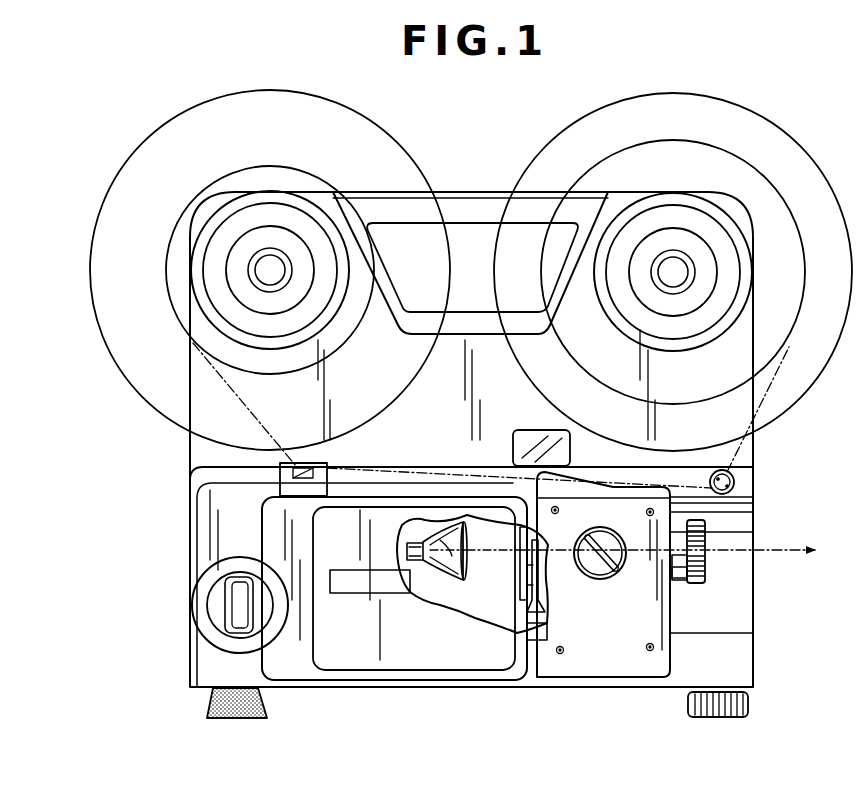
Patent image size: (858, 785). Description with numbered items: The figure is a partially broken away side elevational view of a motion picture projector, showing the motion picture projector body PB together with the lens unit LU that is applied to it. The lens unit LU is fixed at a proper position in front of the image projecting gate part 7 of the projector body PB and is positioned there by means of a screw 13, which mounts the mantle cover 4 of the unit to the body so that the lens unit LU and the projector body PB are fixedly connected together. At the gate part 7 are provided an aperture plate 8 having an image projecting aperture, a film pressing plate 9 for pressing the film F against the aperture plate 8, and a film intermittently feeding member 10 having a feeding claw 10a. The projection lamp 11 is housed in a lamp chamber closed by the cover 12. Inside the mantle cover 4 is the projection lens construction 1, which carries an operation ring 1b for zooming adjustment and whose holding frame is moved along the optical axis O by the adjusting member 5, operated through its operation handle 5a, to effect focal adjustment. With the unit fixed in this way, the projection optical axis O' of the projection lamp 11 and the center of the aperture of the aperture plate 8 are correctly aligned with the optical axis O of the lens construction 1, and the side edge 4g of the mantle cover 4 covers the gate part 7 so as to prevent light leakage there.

The projection lens construction 1 is at (678, 580).
The operation ring 1b is at (700, 562).
The mantle cover 4 is at (638, 670).
The side edge 4g is at (535, 630).
The adjusting member 5 is at (610, 543).
The operation handle 5a is at (607, 563).
The image projecting gate part 7 is at (518, 607).
The aperture plate 8 is at (530, 580).
The film pressing plate 9 is at (533, 557).
The film intermittently feeding member 10 is at (522, 593).
The feeding claw 10a is at (528, 562).
The projection lamp 11 is at (443, 565).
The cover for the lamp chamber 12 is at (410, 662).
The screw 13 is at (560, 656).
The optical axis O is at (670, 526).
The projection optical axis of the projection lamp O' is at (470, 563).
The motion picture projector body PB is at (757, 605).
The lens unit LU is at (600, 684).
The film F is at (748, 457).